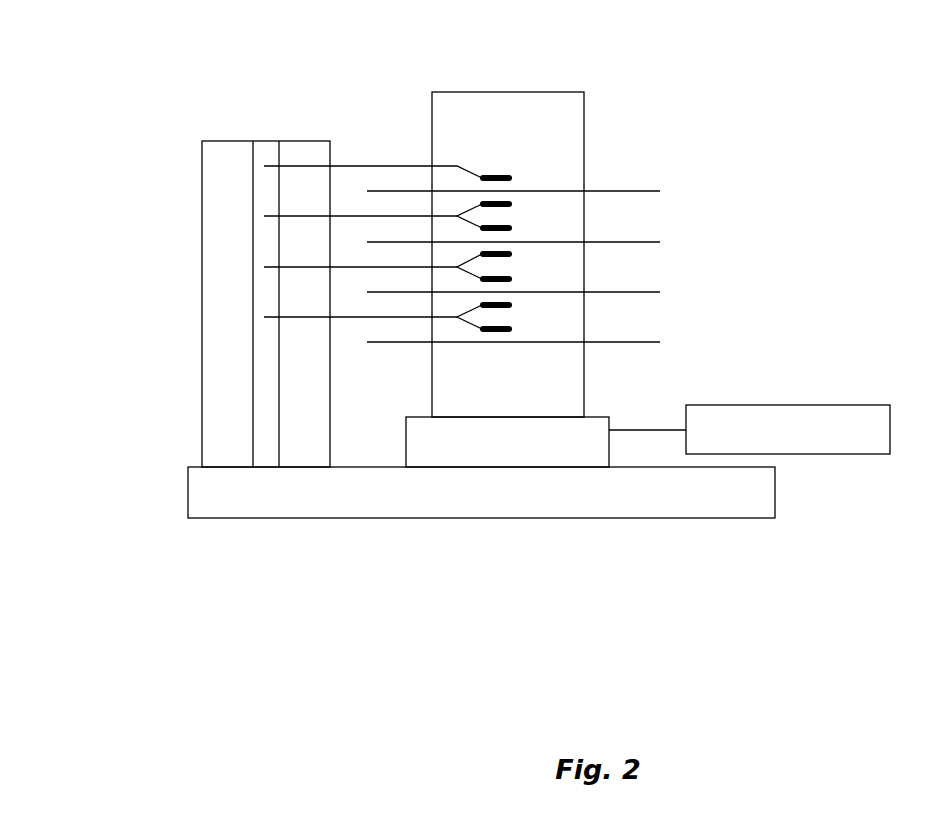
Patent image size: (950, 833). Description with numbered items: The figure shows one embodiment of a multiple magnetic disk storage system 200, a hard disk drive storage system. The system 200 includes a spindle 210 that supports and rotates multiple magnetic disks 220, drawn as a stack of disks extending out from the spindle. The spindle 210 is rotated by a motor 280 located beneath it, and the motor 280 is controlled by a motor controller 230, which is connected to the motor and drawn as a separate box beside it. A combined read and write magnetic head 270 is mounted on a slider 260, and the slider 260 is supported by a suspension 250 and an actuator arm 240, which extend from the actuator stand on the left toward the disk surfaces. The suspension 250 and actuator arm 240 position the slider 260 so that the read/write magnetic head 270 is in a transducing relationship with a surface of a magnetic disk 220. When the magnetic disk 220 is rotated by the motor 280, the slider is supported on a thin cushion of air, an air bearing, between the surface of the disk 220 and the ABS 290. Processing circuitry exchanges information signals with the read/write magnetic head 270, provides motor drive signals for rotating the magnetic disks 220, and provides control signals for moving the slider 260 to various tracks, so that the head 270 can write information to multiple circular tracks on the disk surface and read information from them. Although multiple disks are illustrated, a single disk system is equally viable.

The multiple magnetic disk storage system 200 is at (71, 596).
The spindle 210 is at (583, 82).
The magnetic disks 220 is at (623, 190).
The motor controller 230 is at (816, 405).
The actuator arm 240 is at (381, 165).
The suspension 250 is at (470, 166).
The slider 260 is at (498, 175).
The read/write magnetic head 270 is at (507, 330).
The motor 280 is at (600, 414).
The ABS 290 is at (503, 174).